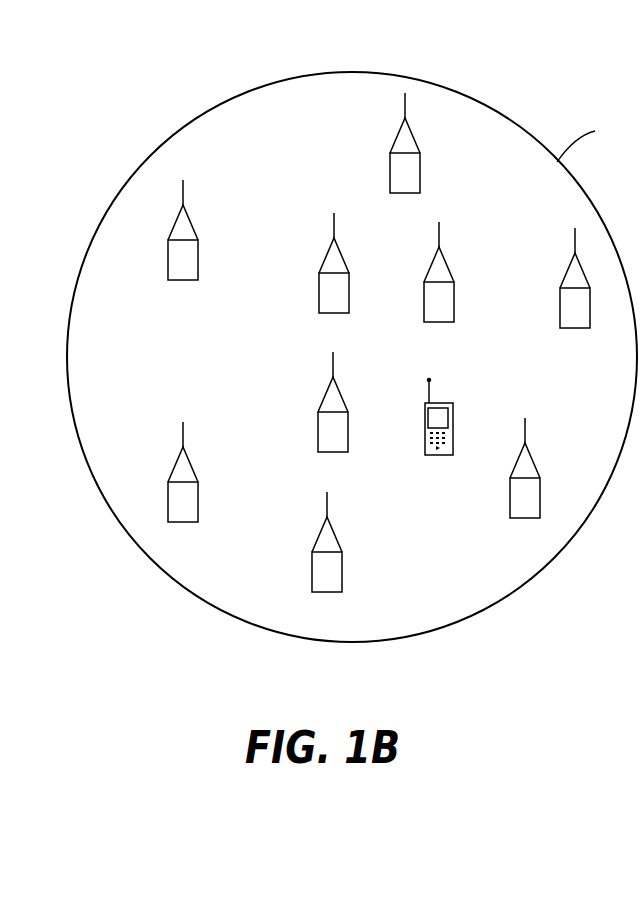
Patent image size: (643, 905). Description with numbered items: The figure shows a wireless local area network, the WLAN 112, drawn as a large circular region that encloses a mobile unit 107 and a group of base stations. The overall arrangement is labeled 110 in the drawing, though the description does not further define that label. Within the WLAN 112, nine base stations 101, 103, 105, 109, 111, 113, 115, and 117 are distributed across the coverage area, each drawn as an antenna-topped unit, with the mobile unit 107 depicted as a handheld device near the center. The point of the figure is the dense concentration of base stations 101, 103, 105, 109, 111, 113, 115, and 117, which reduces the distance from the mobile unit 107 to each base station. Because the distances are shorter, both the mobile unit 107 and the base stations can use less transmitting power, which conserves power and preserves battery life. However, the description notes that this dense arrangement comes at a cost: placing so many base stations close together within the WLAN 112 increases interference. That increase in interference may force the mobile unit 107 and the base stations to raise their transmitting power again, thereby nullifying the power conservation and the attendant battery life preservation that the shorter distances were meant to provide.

The wireless network area 110 is at (155, 58).
The WLAN 112 is at (557, 162).
The base station 101 is at (348, 266).
The base station 103 is at (420, 150).
The base station 105 is at (561, 328).
The mobile unit 107 is at (453, 425).
The base station 109 is at (342, 567).
The base station 111 is at (190, 462).
The base station 113 is at (192, 225).
The base station 115 is at (340, 392).
The base station 117 is at (452, 278).